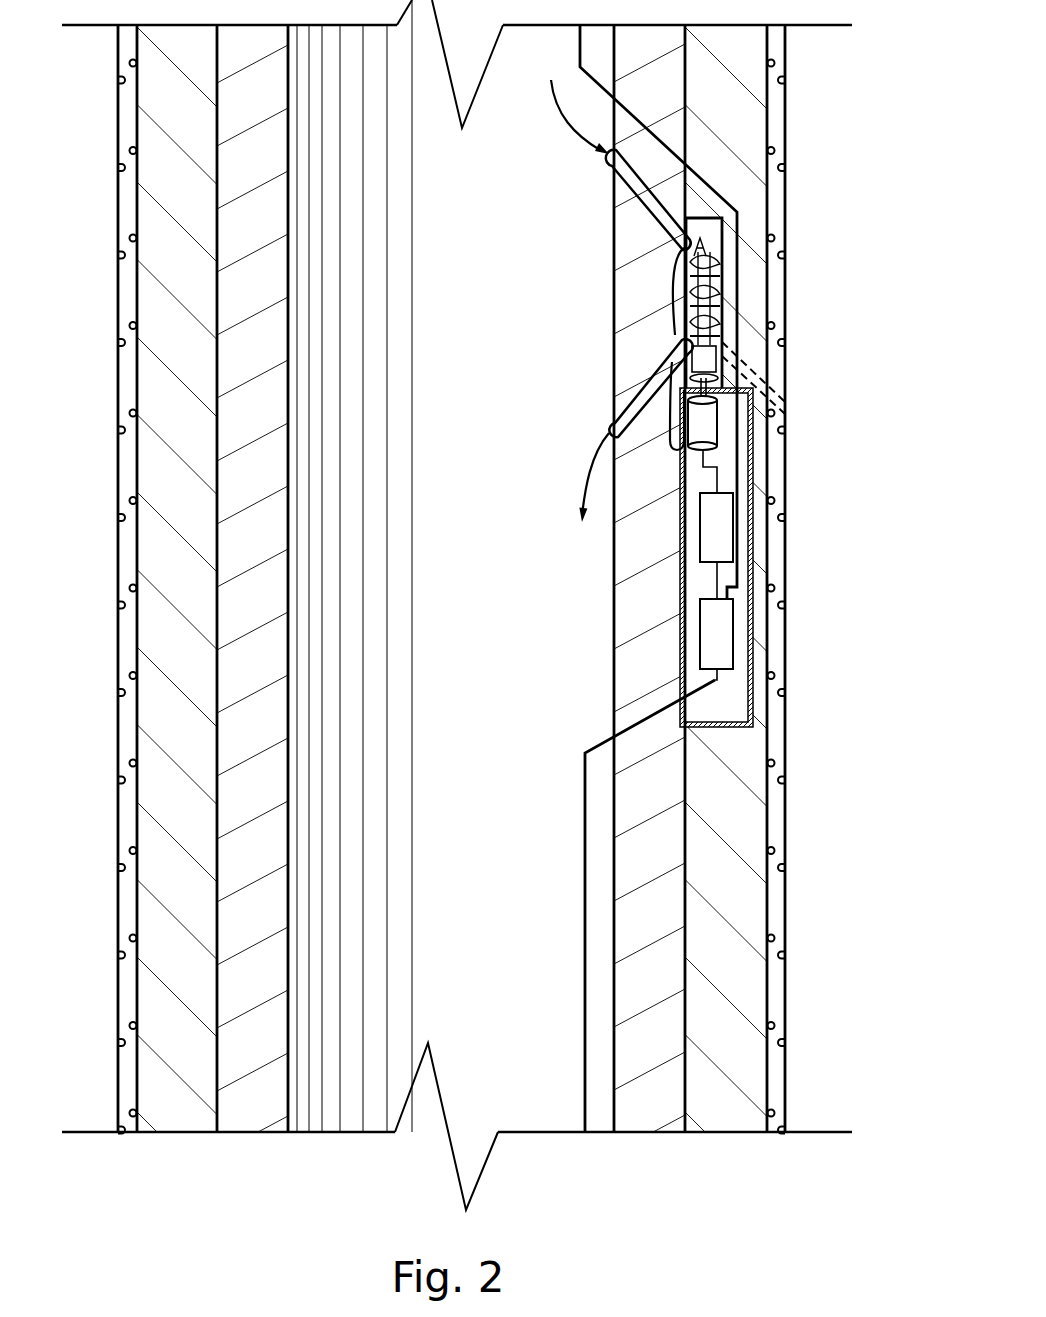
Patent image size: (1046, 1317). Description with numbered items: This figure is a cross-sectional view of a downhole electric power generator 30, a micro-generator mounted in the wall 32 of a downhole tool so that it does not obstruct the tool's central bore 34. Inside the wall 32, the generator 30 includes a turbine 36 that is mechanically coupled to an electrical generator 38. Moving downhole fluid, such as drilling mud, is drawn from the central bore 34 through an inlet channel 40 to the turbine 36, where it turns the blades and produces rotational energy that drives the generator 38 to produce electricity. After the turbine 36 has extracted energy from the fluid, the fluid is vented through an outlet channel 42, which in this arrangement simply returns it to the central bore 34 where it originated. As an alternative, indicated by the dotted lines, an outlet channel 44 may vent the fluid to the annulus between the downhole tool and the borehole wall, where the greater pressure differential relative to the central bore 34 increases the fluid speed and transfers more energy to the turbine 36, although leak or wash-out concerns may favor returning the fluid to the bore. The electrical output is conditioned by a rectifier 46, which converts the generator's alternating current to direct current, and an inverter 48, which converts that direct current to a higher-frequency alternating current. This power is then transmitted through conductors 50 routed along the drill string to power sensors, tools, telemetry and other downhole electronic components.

The downhole electric power generator 30 is at (677, 250).
The wall 32 is at (708, 185).
The central bore 34 is at (543, 1081).
The turbine 36 is at (715, 278).
The electrical generator 38 is at (703, 425).
The inlet channel 40 is at (655, 218).
The outlet channel 42 is at (643, 398).
The outlet channel 44 is at (780, 403).
The rectifier 46 is at (717, 523).
The inverter 48 is at (717, 633).
The conductors 50 is at (580, 44).